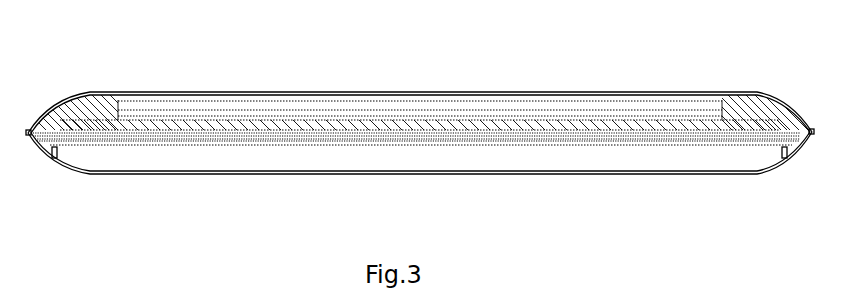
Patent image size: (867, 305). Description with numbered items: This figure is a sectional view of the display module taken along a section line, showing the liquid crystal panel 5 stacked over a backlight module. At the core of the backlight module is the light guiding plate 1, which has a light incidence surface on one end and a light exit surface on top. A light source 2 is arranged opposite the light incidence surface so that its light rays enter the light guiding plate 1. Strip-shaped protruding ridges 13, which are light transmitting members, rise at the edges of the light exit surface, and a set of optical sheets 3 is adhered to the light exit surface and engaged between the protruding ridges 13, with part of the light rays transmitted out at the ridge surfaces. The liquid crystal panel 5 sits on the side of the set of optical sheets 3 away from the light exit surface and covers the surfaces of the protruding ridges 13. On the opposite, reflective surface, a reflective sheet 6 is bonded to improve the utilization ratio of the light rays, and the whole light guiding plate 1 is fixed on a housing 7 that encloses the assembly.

The light guiding plate 1 is at (468, 125).
The light source 2 is at (103, 130).
The set of optical sheets 3 is at (637, 108).
The liquid crystal panel 5 is at (549, 93).
The reflective sheet 6 is at (201, 145).
The housing 7 is at (373, 172).
The protruding ridges 13 is at (88, 112).